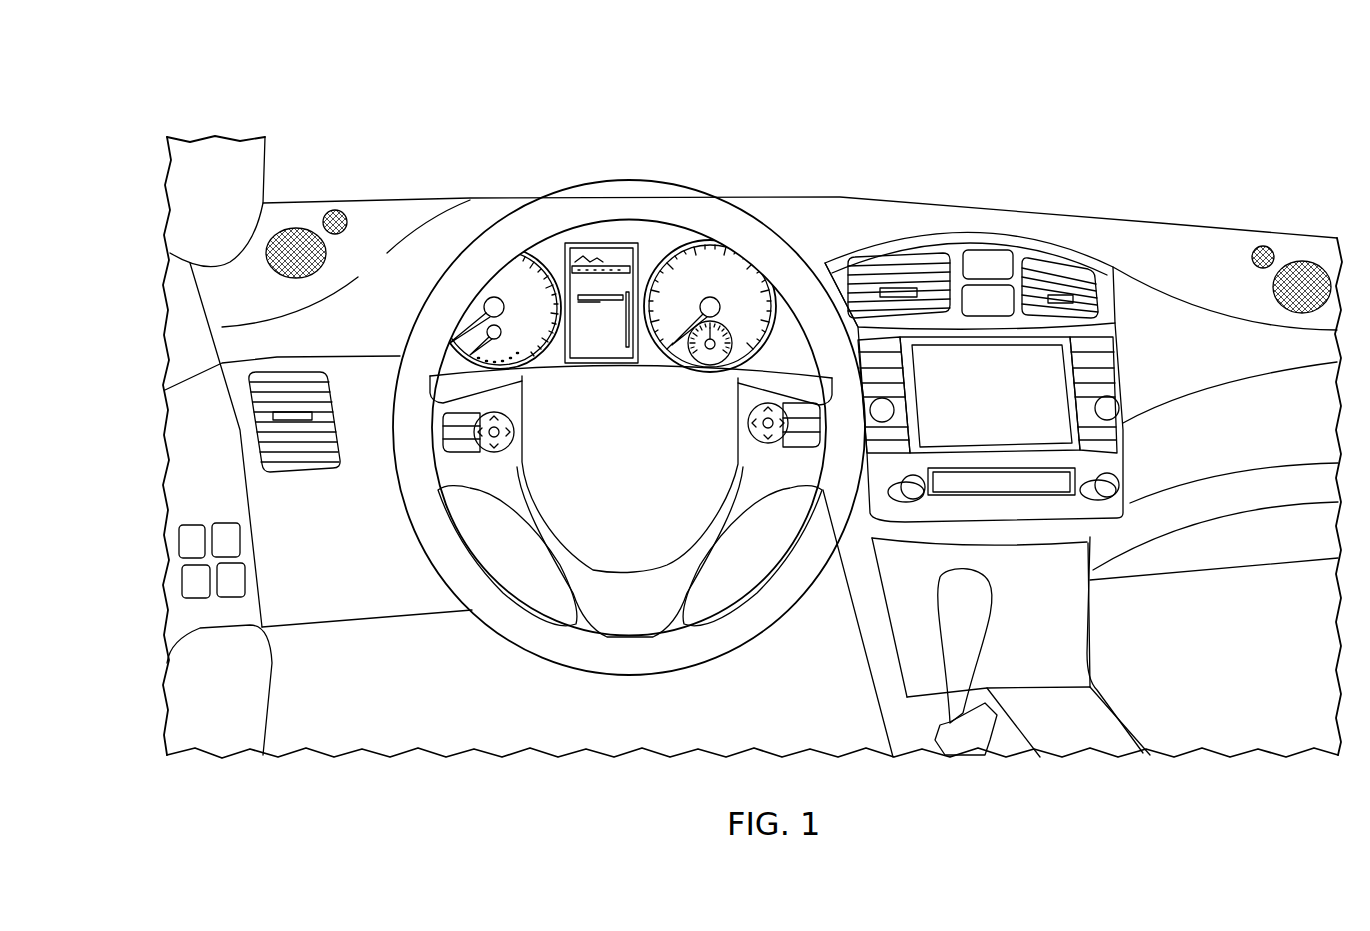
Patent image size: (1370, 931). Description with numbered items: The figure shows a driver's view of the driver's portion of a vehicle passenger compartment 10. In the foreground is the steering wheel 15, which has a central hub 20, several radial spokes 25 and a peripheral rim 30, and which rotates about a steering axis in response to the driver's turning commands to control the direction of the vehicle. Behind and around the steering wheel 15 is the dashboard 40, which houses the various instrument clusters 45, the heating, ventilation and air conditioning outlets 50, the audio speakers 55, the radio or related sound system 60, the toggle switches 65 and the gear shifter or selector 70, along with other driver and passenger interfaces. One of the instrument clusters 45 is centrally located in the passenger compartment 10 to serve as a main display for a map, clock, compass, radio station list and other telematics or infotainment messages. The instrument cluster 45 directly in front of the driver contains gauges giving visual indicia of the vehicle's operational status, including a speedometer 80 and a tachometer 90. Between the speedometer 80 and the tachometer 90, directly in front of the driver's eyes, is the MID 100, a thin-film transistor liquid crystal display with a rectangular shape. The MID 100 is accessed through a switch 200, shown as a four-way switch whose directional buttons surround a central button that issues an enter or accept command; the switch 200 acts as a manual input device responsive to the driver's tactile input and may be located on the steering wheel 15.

The vehicle passenger compartment 10 is at (735, 59).
The steering wheel 15 is at (555, 135).
The central hub 20 is at (643, 474).
The radial spokes 25 is at (517, 395).
The peripheral rim 30 is at (662, 182).
The dashboard 40 is at (328, 562).
The instrument clusters 45 is at (685, 240).
The HVAC outlets 50 is at (248, 415).
The audio speakers 55 is at (313, 218).
The radio or related sound system 60 is at (1000, 493).
The toggle switches 65 is at (180, 530).
The gear shifter or selector 70 is at (995, 610).
The speedometer 80 is at (533, 250).
The tachometer 90 is at (680, 247).
The MID 100 is at (588, 243).
The switch 200 is at (516, 432).